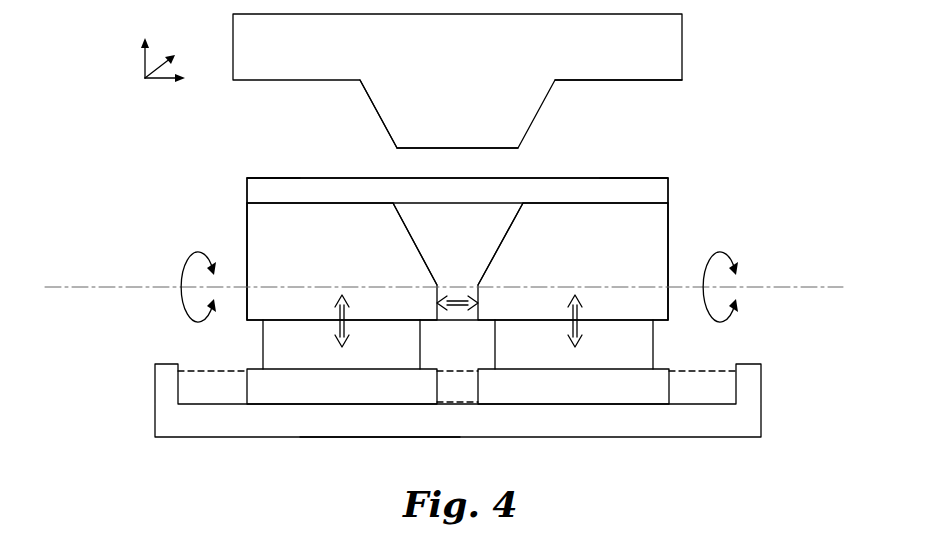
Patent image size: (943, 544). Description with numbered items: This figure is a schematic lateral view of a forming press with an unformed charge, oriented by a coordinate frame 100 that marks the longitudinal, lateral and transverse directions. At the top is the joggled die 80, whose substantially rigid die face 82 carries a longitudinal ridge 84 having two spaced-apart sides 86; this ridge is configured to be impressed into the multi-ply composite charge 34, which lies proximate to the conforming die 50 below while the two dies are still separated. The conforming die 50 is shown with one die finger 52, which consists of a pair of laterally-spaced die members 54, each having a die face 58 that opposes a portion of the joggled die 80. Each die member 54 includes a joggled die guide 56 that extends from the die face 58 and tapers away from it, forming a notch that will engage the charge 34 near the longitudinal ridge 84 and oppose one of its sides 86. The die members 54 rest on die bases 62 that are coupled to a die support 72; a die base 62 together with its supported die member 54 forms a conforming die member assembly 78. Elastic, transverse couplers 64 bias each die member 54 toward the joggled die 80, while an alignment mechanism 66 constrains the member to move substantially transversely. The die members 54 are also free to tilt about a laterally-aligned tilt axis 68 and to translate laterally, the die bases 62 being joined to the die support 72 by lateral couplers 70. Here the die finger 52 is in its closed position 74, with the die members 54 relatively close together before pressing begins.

The multi-ply composite charge 34 is at (669, 183).
The conforming die 50 is at (762, 178).
The die finger 52 is at (236, 196).
The die member 54 is at (247, 232).
The joggled die guide 56 is at (412, 238).
The die face 58 is at (282, 178).
The die base 62 is at (247, 393).
The elastic, transverse coupler 64 is at (263, 340).
The alignment mechanism 66 is at (263, 350).
The tilt axis 68 is at (100, 287).
The lateral coupler 70 is at (196, 371).
The die support 72 is at (712, 438).
The closed position 74 is at (374, 456).
The conforming die member assembly 78 is at (189, 338).
The joggled die 80 is at (682, 44).
The die face 82 is at (582, 81).
The longitudinal ridge 84 is at (375, 108).
The side 86 is at (383, 124).
The coordinate frame 100 is at (140, 96).